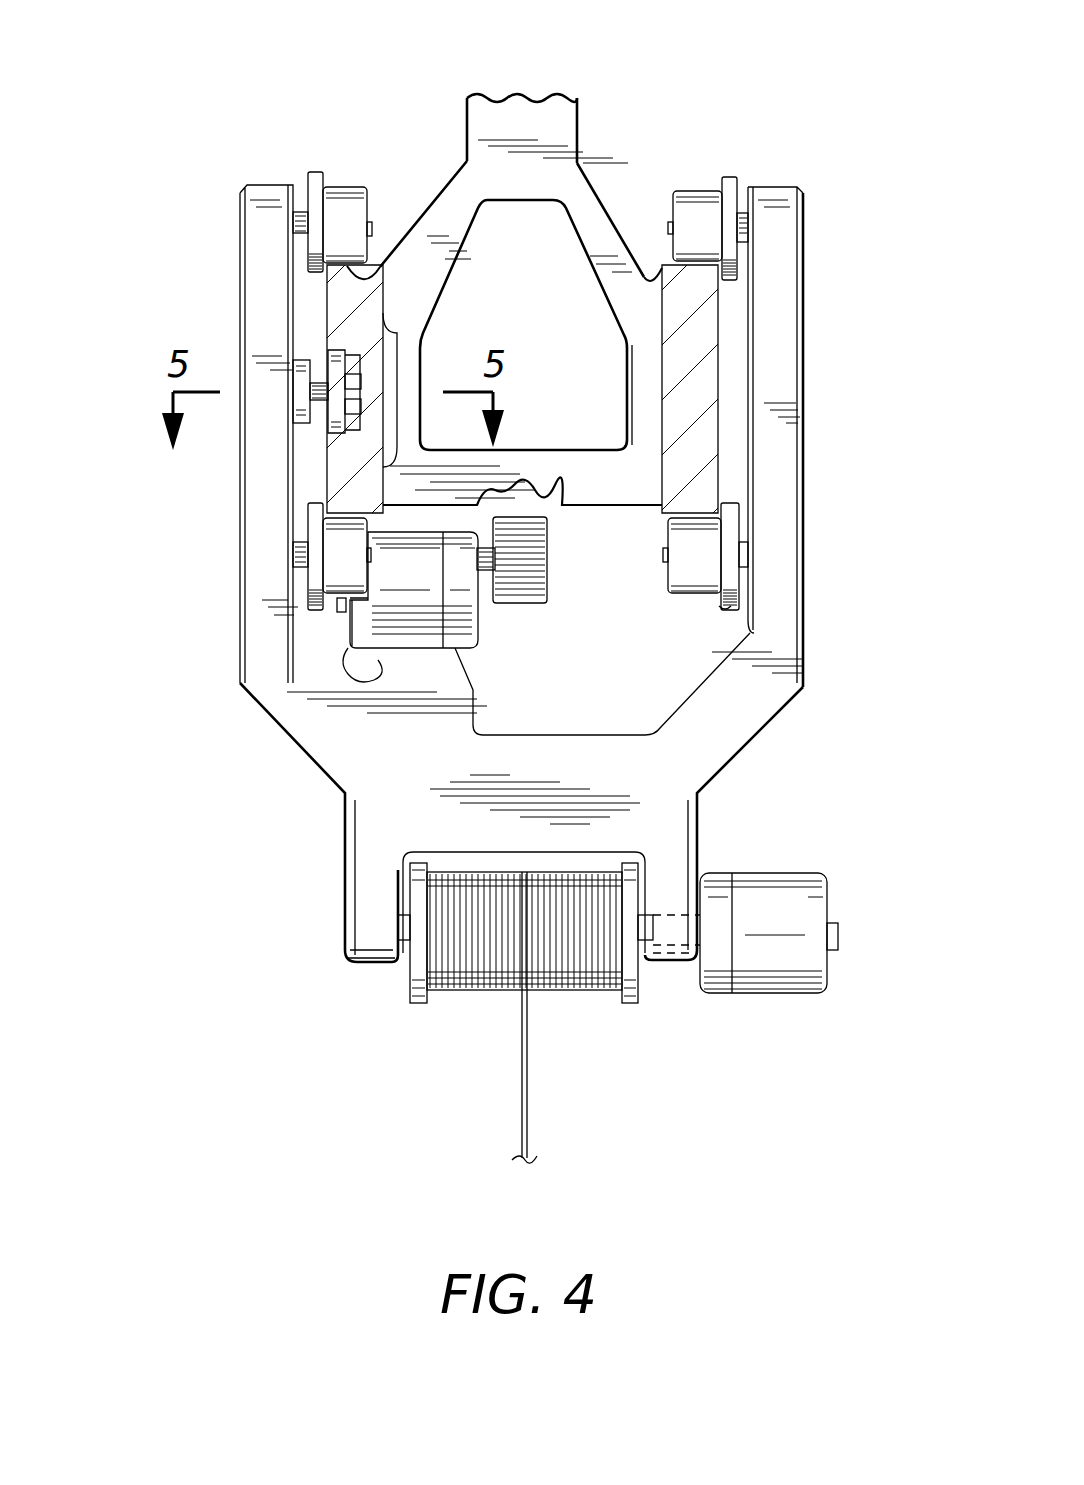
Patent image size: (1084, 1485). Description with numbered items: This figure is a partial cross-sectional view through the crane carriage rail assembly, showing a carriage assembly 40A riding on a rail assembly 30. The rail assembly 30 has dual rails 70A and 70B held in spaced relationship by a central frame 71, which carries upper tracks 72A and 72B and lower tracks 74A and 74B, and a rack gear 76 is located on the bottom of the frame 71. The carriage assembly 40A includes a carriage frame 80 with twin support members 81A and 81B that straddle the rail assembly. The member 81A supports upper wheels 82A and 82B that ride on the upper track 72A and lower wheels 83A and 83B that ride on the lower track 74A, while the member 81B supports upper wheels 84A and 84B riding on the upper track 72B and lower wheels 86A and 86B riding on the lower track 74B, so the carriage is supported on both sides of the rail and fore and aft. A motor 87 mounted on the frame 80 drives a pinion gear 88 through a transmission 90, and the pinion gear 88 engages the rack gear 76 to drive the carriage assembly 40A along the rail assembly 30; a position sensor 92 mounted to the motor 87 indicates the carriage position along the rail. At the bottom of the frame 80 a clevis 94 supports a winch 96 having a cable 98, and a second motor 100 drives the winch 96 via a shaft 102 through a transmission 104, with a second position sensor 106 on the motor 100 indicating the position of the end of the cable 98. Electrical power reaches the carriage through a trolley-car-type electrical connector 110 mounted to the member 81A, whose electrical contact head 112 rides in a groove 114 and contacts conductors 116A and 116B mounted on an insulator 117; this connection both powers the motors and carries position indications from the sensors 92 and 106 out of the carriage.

The rail assembly 30 is at (508, 86).
The central frame 71 is at (577, 123).
The rail 70A is at (327, 292).
The rail 70B is at (719, 308).
The upper track 72A is at (395, 277).
The upper track 72B is at (648, 276).
The upper wheel 82A is at (297, 186).
The upper wheel 82B is at (340, 187).
The upper wheel 84A is at (748, 191).
The upper wheel 84B is at (702, 190).
The lower track 74A is at (320, 500).
The lower track 74B is at (739, 497).
The support member 81A is at (240, 545).
The support member 81B is at (803, 420).
The carriage frame 80 is at (818, 502).
The electrical connector 110 is at (282, 368).
The electrical contact head 112 is at (323, 408).
The groove 114 is at (330, 362).
The conductor 116A is at (352, 382).
The conductor 116B is at (352, 408).
The insulator 117 is at (383, 435).
The transmission 90 is at (478, 650).
The position sensor 92 is at (348, 603).
The lower wheel 83A is at (212, 630).
The lower wheel 83B is at (340, 608).
The motor 87 is at (350, 670).
The pinion gear 88 is at (522, 603).
The rack gear 76 is at (553, 520).
The lower wheel 86A is at (827, 636).
The lower wheel 86B is at (731, 606).
The carriage assembly 40A is at (330, 865).
The clevis 94 is at (373, 963).
The winch 96 is at (460, 992).
The cable 98 is at (522, 1135).
The motor 100 is at (775, 873).
The shaft 102 is at (673, 970).
The transmission 104 is at (728, 993).
The position sensor 106 is at (838, 927).